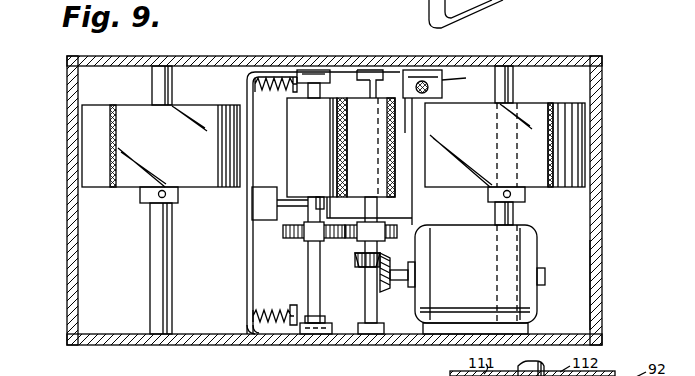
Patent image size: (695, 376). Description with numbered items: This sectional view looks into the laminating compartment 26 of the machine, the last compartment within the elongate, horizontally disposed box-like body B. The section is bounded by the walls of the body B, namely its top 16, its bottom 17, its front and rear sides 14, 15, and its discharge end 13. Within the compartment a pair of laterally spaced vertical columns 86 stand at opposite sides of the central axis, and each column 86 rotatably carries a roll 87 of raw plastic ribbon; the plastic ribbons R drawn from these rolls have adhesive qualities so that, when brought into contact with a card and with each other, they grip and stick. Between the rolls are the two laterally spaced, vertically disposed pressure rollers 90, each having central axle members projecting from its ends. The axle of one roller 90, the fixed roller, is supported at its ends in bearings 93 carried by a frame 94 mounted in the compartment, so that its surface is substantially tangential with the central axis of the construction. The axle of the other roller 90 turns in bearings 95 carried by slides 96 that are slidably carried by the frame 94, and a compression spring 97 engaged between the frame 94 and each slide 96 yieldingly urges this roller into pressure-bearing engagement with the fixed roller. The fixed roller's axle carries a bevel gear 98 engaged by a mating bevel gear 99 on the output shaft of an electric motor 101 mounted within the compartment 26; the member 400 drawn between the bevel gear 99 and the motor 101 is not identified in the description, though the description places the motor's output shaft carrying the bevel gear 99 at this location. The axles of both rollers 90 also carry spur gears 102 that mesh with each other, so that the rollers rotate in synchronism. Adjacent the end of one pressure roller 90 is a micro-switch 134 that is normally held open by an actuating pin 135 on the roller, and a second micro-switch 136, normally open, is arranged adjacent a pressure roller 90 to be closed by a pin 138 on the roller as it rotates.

The discharge end 13 is at (572, 285).
The front side 14 is at (600, 203).
The rear side 15 is at (72, 185).
The top 16 is at (280, 66).
The bottom 17 is at (145, 338).
The laminating compartment 26 is at (119, 298).
The vertical columns 86 is at (156, 252).
The roll of raw plastic ribbon 87 is at (136, 108).
The pressure rollers 90 is at (288, 150).
The bearings 93 is at (380, 331).
The frame 94 is at (248, 272).
The bearings 95 is at (316, 84).
The slides 96 is at (313, 70).
The compression spring 97 is at (262, 87).
The bevel gear 98 is at (358, 264).
The mating bevel gear 99 is at (383, 275).
The electric motor 101 is at (480, 279).
The spur gears 102 is at (297, 238).
The micro-switch 134 is at (440, 75).
The actuating pin 135 is at (375, 78).
The micro-switch 136 is at (252, 207).
The pin 138 is at (320, 197).
The motor shaft 400 is at (395, 276).
The box-like body B is at (614, 63).
The plastic ribbons R is at (337, 154).